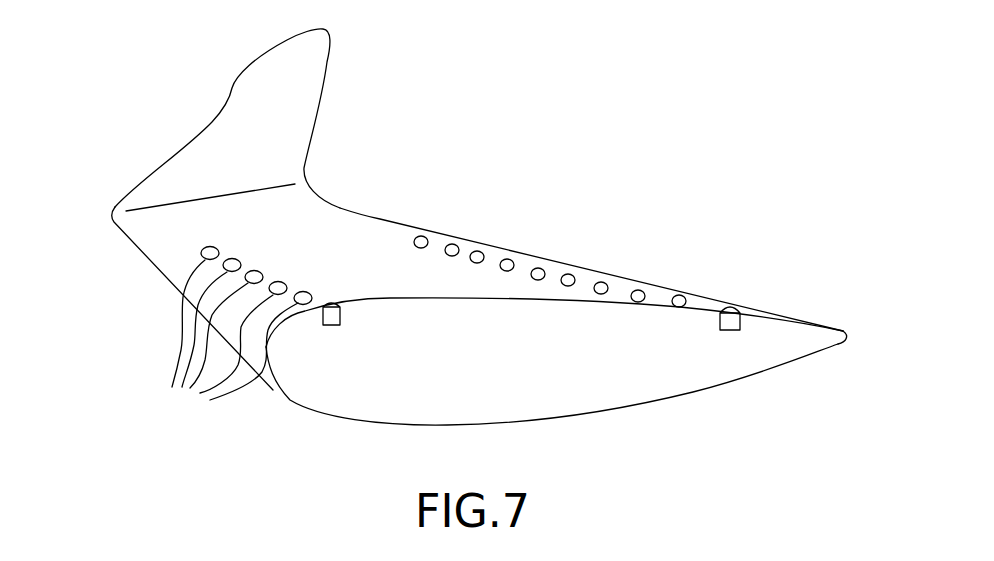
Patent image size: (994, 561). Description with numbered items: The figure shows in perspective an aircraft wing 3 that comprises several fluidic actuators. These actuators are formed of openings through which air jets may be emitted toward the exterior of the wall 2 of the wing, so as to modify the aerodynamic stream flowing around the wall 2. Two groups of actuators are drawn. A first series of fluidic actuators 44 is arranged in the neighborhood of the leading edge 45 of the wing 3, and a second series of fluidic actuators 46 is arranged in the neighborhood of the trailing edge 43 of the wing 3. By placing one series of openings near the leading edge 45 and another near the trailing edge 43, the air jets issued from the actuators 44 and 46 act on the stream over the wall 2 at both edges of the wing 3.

The wing 3 is at (745, 180).
The wall 2 is at (332, 227).
The trailing edge 43 is at (622, 282).
The first series of fluidic actuators 44 is at (238, 334).
The leading edge 45 is at (130, 240).
The second series of fluidic actuators 46 is at (426, 240).